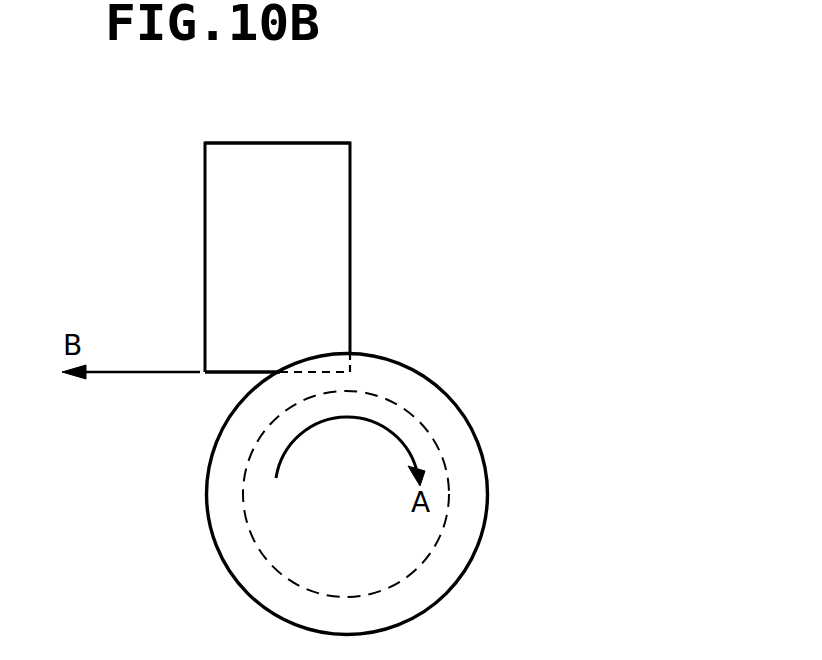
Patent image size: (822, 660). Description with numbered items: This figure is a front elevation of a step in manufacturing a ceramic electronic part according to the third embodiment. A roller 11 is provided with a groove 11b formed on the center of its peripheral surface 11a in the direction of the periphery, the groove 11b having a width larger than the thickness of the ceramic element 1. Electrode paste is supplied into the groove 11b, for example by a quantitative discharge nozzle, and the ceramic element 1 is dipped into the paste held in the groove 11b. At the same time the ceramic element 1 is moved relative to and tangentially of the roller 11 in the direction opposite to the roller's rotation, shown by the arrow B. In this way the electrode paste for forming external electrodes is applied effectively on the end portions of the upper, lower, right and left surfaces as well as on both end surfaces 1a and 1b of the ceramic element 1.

The ceramic element 1 is at (265, 263).
The end surface 1a is at (223, 373).
The end surface 1b is at (242, 141).
The roller 11 is at (399, 435).
The peripheral surface 11a is at (483, 451).
The groove 11b is at (391, 398).